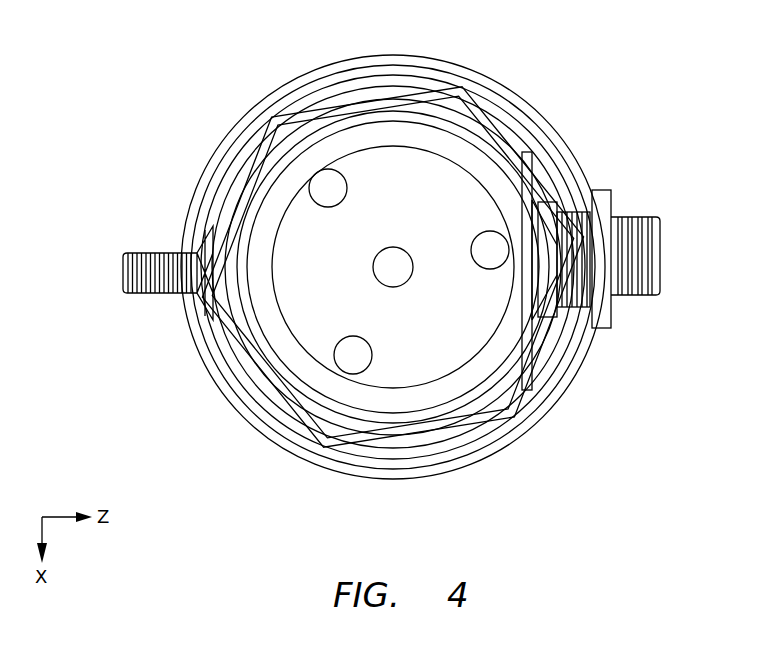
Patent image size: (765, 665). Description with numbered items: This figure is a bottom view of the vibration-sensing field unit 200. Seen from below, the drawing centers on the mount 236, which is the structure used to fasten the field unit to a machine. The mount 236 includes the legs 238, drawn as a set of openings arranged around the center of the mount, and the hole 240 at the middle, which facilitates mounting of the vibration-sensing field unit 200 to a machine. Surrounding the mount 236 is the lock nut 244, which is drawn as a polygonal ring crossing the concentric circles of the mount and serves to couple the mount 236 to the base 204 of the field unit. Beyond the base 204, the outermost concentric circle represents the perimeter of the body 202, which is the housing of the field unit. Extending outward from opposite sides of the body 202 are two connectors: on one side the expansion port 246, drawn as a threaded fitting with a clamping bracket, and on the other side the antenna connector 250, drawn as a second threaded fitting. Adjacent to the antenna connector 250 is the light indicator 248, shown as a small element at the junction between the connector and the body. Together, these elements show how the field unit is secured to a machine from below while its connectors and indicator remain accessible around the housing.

The vibration-sensing field unit 200 is at (136, 96).
The body 202 is at (540, 413).
The base 204 is at (363, 437).
The mount 236 is at (431, 367).
The legs 238 is at (327, 182).
The hole 240 is at (431, 185).
The lock nut 244 is at (553, 342).
The expansion port 246 is at (645, 298).
The light indicator 248 is at (180, 296).
The antenna connector 250 is at (147, 253).